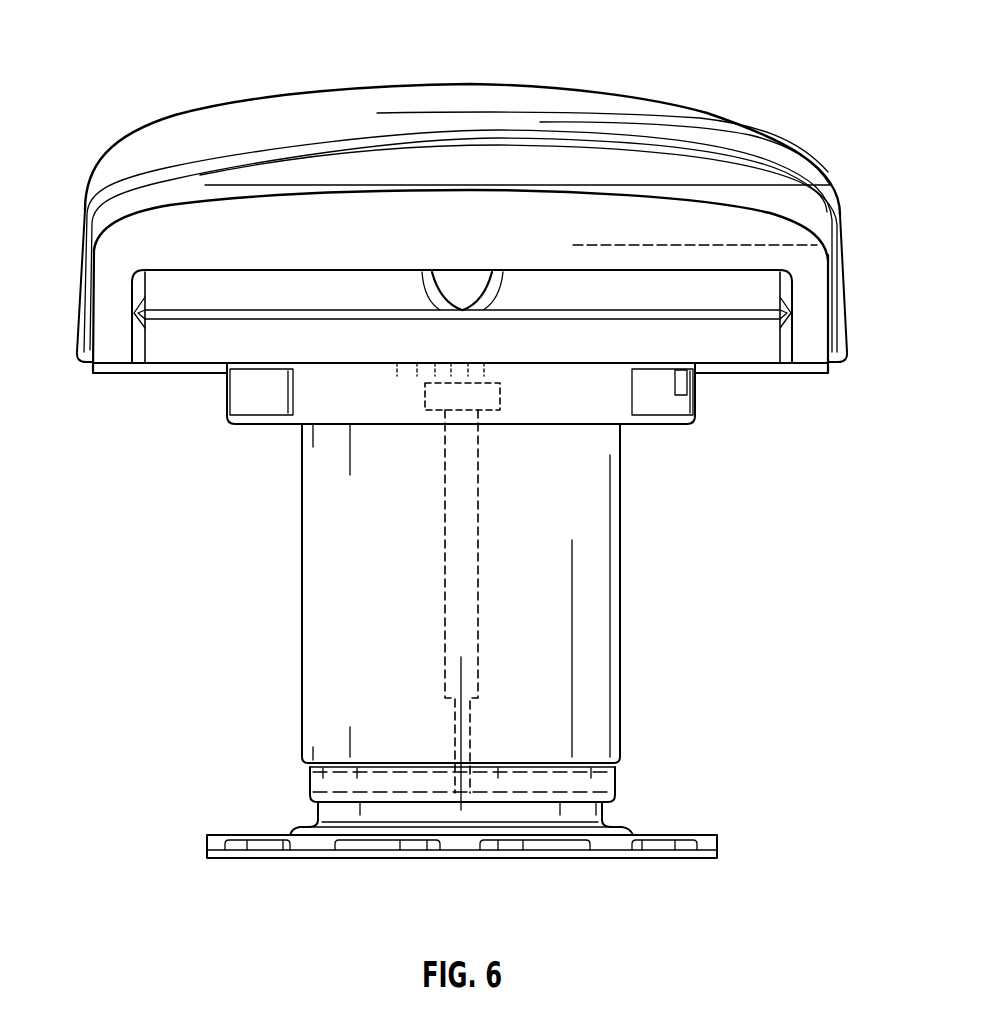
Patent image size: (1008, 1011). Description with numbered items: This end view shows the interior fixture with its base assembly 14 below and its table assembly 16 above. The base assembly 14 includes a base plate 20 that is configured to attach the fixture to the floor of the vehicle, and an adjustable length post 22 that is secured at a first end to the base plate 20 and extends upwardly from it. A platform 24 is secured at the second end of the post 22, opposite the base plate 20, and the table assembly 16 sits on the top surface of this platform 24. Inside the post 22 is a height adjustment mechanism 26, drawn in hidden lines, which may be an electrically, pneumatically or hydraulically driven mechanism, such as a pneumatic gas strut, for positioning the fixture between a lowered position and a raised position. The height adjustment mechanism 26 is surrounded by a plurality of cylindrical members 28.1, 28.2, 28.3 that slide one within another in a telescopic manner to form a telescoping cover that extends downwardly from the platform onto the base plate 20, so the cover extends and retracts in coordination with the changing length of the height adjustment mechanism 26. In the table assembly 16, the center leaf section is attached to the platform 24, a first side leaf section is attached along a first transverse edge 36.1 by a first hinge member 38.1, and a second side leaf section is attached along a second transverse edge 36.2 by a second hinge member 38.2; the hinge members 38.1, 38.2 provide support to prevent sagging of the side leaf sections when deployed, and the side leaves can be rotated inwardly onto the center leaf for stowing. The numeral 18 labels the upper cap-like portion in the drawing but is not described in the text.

The base assembly 14 is at (225, 779).
The table assembly 16 is at (714, 437).
The cap 18 is at (237, 42).
The base plate 20 is at (663, 860).
The adjustable length post 22 is at (243, 542).
The platform 24 is at (627, 418).
The height adjustment mechanism 26 is at (484, 542).
The cylindrical member 28.1 is at (603, 723).
The cylindrical member 28.2 is at (603, 780).
The cylindrical member 28.3 is at (598, 817).
The first transverse edge 36.1 is at (133, 350).
The second transverse edge 36.2 is at (784, 348).
The first hinge member 38.1 is at (136, 313).
The second hinge member 38.2 is at (790, 312).